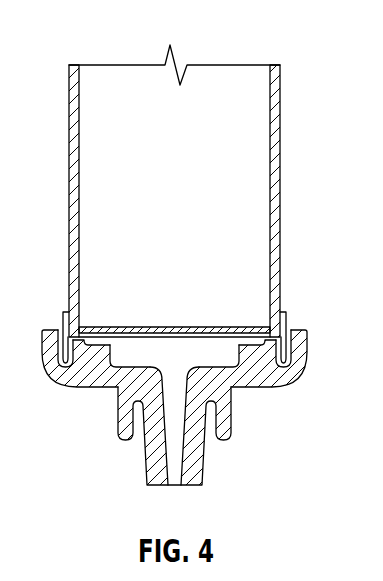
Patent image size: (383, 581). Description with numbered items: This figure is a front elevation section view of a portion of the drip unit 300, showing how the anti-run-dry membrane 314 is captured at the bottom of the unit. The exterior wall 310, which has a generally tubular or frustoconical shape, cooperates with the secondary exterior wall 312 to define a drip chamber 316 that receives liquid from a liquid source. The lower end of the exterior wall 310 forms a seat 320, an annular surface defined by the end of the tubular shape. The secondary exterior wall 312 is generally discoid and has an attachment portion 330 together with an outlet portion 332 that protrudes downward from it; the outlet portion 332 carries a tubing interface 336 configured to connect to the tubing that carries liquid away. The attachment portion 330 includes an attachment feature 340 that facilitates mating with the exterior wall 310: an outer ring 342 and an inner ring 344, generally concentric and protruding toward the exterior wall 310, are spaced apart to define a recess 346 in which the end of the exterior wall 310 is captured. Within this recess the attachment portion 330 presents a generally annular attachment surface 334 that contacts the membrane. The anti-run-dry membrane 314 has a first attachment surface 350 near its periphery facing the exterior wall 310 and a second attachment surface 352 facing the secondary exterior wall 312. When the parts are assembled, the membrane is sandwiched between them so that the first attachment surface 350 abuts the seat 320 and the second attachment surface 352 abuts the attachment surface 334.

The drip unit 300 is at (191, 254).
The exterior wall 310 is at (191, 251).
The secondary exterior wall 312 is at (191, 363).
The anti-run-dry membrane 314 is at (170, 342).
The drip chamber 316 is at (195, 207).
The seat 320 is at (281, 344).
The attachment portion 330 is at (191, 381).
The outlet portion 332 is at (134, 461).
The attachment surface 334 is at (278, 349).
The tubing interface 336 is at (204, 453).
The attachment feature 340 is at (141, 347).
The outer ring 342 is at (54, 329).
The inner ring 344 is at (98, 330).
The recess 346 is at (58, 378).
The first attachment surface 350 is at (285, 347).
The second attachment surface 352 is at (76, 370).